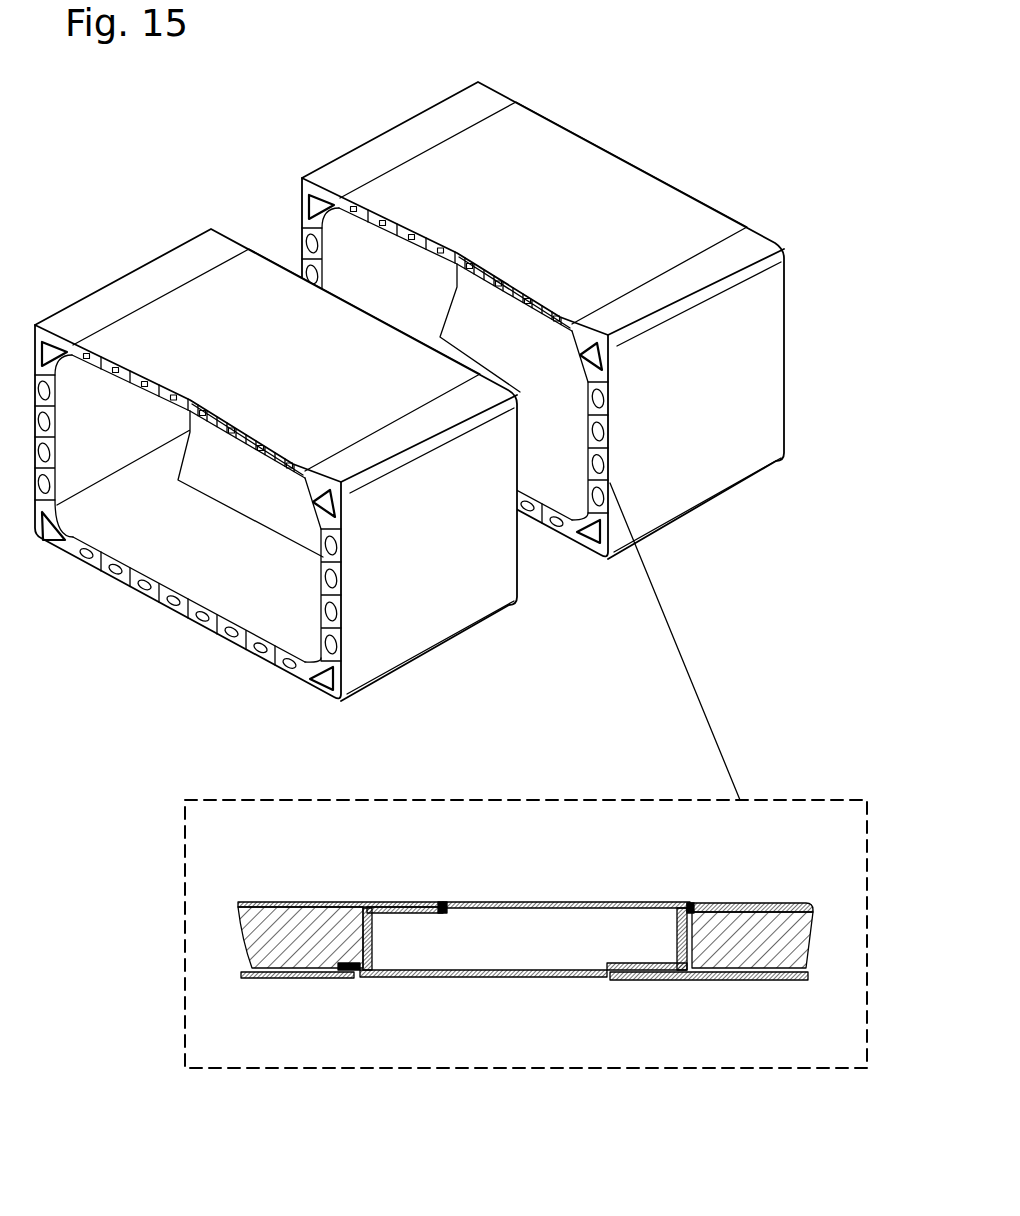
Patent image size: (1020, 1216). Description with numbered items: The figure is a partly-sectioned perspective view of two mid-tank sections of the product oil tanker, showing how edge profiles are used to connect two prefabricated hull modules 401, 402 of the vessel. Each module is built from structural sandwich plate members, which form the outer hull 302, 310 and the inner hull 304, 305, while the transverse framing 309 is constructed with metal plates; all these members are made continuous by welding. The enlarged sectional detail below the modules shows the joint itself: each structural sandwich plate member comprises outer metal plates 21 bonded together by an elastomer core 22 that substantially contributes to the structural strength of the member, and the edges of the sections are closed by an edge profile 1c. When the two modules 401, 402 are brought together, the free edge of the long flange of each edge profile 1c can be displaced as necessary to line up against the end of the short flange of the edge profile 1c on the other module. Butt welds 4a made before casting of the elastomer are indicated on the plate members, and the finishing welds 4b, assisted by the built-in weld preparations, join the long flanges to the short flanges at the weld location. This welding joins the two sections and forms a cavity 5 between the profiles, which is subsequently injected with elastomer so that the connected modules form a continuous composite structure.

The hull module 401 is at (145, 243).
The hull module 402 is at (363, 131).
The outer hull 302 is at (37, 393).
The inner hull 304 is at (335, 238).
The inner hull 305 is at (213, 585).
The transverse framing 309 is at (55, 555).
The outer hull 310 is at (585, 145).
The outer metal plate 21 is at (283, 902).
The elastomer core 22 is at (322, 951).
The edge profile 1c is at (540, 900).
The butt weld 4a is at (693, 900).
The finishing weld 4b is at (430, 902).
The cavity 5 is at (518, 950).